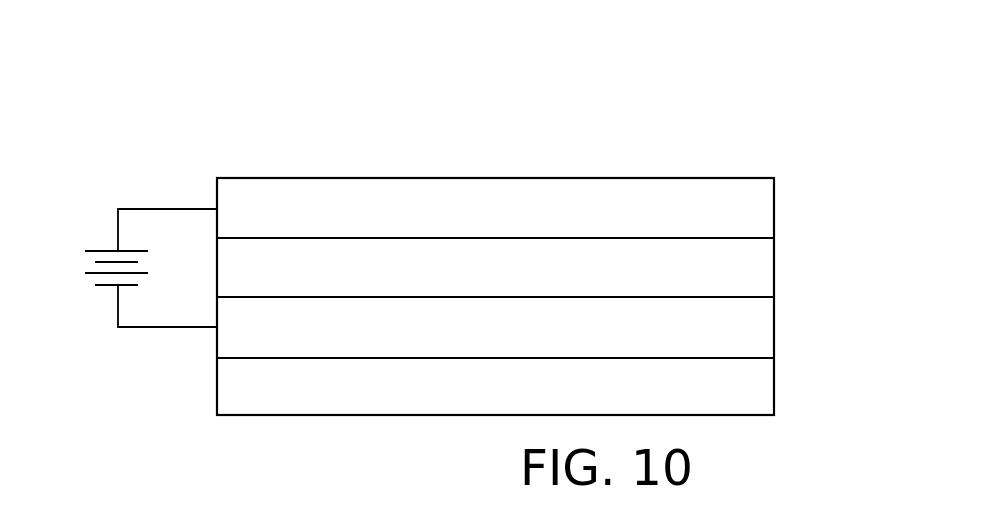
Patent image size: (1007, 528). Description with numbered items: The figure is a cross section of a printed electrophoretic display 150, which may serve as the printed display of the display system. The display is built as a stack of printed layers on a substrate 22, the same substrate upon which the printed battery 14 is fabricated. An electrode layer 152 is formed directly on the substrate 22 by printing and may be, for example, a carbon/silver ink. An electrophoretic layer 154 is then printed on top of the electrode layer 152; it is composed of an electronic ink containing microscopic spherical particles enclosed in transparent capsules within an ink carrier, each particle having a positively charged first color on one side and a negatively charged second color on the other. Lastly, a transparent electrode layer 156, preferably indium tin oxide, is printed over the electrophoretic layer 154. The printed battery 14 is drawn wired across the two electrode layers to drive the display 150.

The printed electrophoretic display 150 is at (720, 90).
The transparent electrode layer 156 is at (752, 203).
The electrophoretic layer 154 is at (750, 268).
The electrode layer 152 is at (751, 327).
The substrate 22 is at (749, 390).
The printed battery 14 is at (93, 248).